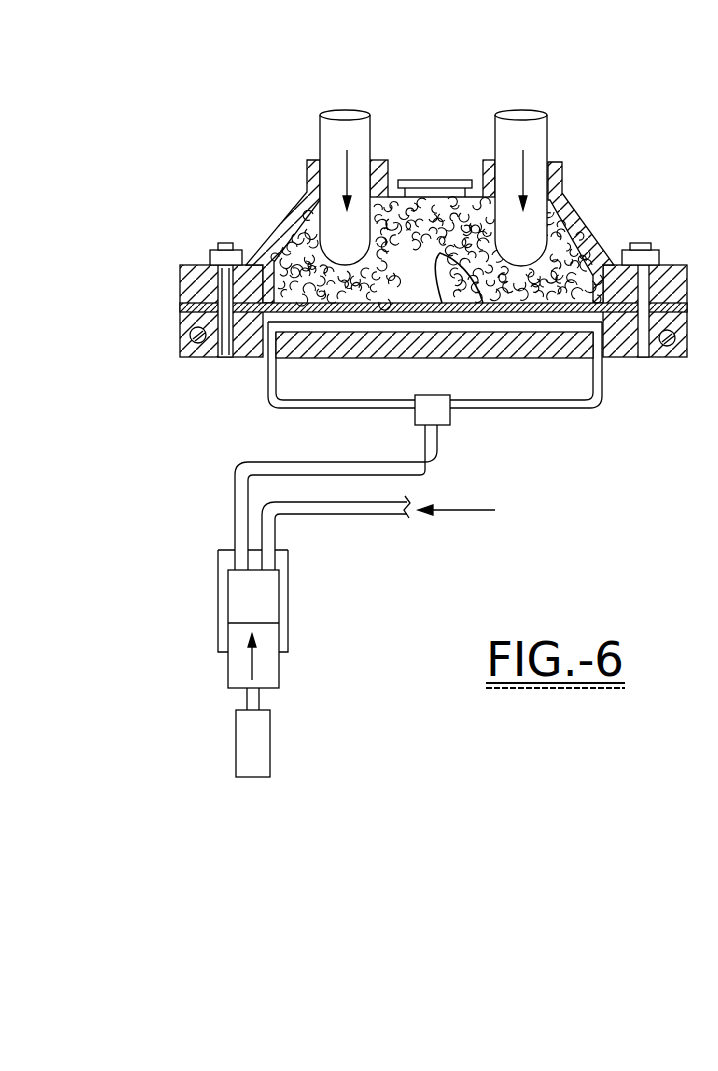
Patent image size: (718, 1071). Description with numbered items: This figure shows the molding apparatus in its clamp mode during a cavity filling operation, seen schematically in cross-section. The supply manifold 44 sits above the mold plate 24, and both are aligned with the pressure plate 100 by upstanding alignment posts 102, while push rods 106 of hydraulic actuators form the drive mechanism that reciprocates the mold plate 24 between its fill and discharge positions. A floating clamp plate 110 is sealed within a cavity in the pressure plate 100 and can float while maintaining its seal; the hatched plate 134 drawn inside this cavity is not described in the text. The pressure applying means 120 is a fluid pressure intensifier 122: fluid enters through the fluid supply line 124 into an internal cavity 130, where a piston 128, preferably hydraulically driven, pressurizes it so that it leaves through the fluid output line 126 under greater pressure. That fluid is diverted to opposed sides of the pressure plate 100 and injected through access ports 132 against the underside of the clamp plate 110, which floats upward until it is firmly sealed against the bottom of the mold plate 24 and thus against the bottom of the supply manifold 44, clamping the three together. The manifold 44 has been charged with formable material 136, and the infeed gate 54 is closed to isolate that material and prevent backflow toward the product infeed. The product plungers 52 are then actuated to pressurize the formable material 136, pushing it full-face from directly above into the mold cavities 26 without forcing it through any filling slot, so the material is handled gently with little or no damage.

The mold plate 24 is at (365, 303).
The mold cavities 26 is at (481, 303).
The supply manifold 44 is at (260, 228).
The product plungers 52 is at (347, 120).
The infeed gate 54 is at (437, 180).
The pressure plate 100 is at (471, 370).
The alignment posts 102 is at (218, 247).
The push rods 106 is at (191, 332).
The floating clamp plate 110 is at (543, 318).
The pressure applying means 120 is at (205, 593).
The fluid pressure intensifier 122 is at (290, 640).
The fluid supply line 124 is at (380, 516).
The fluid output line 126 is at (268, 462).
The piston 128 is at (278, 655).
The internal cavity 130 is at (277, 592).
The access ports 132 is at (265, 348).
The plate 134 is at (382, 332).
The formable material 136 is at (566, 277).